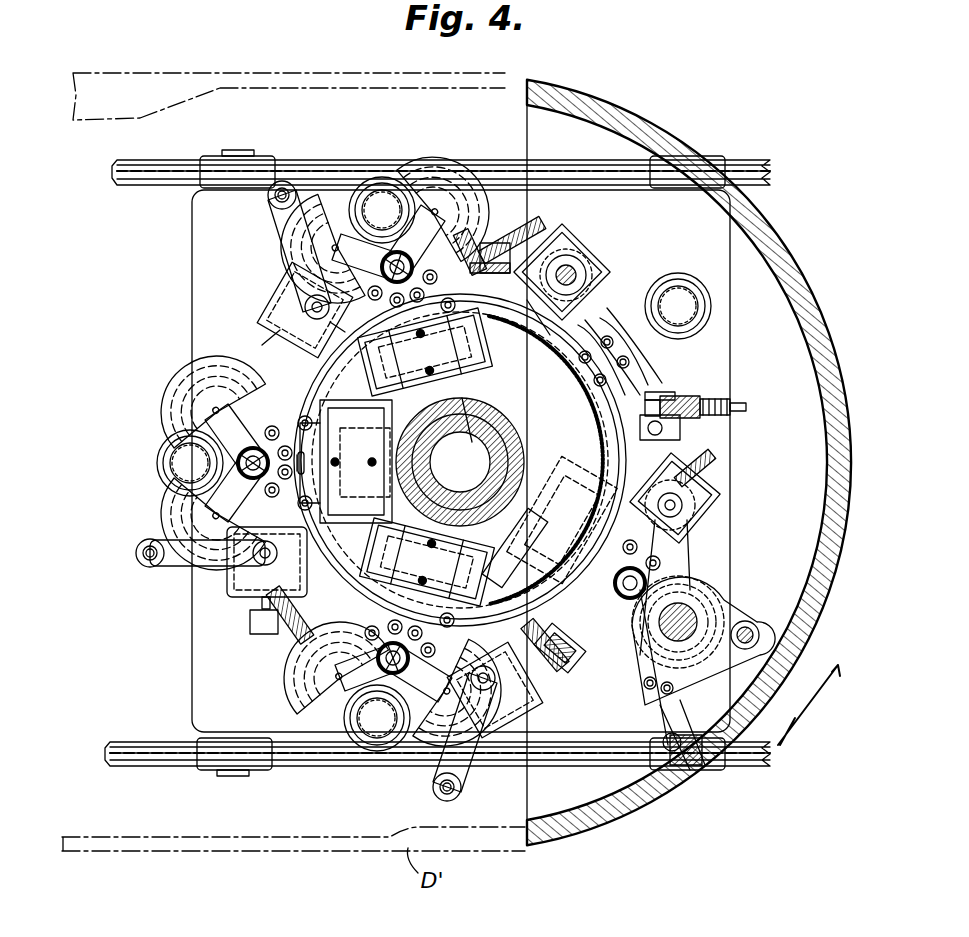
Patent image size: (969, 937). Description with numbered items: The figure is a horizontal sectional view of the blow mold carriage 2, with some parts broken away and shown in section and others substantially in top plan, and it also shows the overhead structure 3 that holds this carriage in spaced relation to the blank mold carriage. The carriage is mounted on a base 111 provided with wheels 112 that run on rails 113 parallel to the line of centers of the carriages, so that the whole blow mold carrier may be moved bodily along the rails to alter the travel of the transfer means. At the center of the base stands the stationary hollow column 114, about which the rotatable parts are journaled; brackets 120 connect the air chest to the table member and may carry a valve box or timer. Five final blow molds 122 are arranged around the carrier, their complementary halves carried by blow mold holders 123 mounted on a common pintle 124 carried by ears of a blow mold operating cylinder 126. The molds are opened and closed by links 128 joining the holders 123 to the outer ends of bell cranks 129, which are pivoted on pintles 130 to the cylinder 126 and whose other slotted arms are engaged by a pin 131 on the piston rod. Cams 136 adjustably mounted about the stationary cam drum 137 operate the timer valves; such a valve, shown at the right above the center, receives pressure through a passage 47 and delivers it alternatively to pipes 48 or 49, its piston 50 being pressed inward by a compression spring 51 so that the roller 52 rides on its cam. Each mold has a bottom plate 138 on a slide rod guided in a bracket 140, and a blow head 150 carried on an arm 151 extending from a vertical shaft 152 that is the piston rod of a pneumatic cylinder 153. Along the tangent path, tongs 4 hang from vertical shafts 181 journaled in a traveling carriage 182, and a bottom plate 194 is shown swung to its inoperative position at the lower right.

The blow mold carriage 2 is at (170, 301).
The overhead structure 3 is at (548, 100).
The tongs 4 is at (660, 690).
The passage 47 is at (690, 432).
The pipe 48 is at (560, 480).
The pipe 49 is at (720, 410).
The piston 50 is at (670, 398).
The compression spring 51 is at (730, 398).
The roller 52 is at (640, 380).
The base 111 is at (200, 690).
The wheels 112 is at (240, 160).
The rails 113 is at (770, 168).
The stationary hollow column 114 is at (470, 405).
The brackets 120 is at (545, 242).
The final blow molds 122 is at (330, 225).
The blow mold holders 123 is at (505, 255).
The pintle 124 is at (240, 460).
The blow mold operating cylinder 126 is at (355, 512).
The links 128 is at (292, 360).
The bell cranks 129 is at (300, 332).
The pintles 130 is at (455, 302).
The pin 131 is at (700, 540).
The cams 136 is at (600, 350).
The cam drum 137 is at (615, 372).
The bottom plate 138 is at (678, 290).
The bracket 140 is at (618, 325).
The blow head 150 is at (278, 200).
The arm 151 is at (290, 238).
The vertical shaft 152 is at (590, 270).
The pneumatic cylinder 153 is at (720, 490).
The vertical shafts 181 is at (645, 700).
The traveling carriage 182 is at (720, 612).
The bottom plates 194 is at (690, 748).